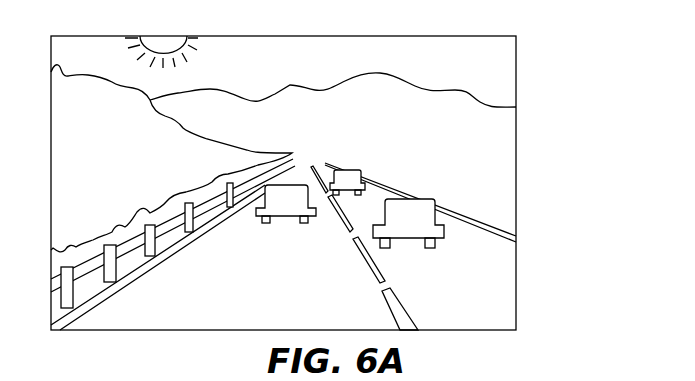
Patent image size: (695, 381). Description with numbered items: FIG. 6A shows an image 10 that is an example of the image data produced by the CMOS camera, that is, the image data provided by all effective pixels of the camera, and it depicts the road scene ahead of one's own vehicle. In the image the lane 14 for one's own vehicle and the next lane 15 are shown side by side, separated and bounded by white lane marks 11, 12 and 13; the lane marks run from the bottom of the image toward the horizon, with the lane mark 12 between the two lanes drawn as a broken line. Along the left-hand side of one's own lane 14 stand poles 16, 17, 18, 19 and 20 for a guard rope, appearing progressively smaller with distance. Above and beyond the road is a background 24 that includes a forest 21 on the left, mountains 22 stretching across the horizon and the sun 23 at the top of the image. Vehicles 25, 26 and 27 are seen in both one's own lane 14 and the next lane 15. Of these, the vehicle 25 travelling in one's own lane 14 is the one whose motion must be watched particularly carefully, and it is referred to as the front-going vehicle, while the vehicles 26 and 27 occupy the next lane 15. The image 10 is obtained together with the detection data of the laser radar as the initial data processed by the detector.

The image 10 is at (516, 88).
The white lane mark 11 is at (168, 260).
The white lane mark 12 is at (362, 257).
The white lane mark 13 is at (477, 229).
The lane 14 is at (268, 297).
The next lane 15 is at (445, 308).
The pole 16 is at (68, 267).
The pole 17 is at (112, 245).
The pole 18 is at (150, 225).
The pole 19 is at (188, 203).
The pole 20 is at (232, 207).
The forest 21 is at (171, 158).
The mountains 22 is at (333, 95).
The sun 23 is at (165, 42).
The background 24 is at (438, 55).
The front-going vehicle 25 is at (297, 184).
The vehicle 26 is at (345, 171).
The vehicle 27 is at (415, 199).